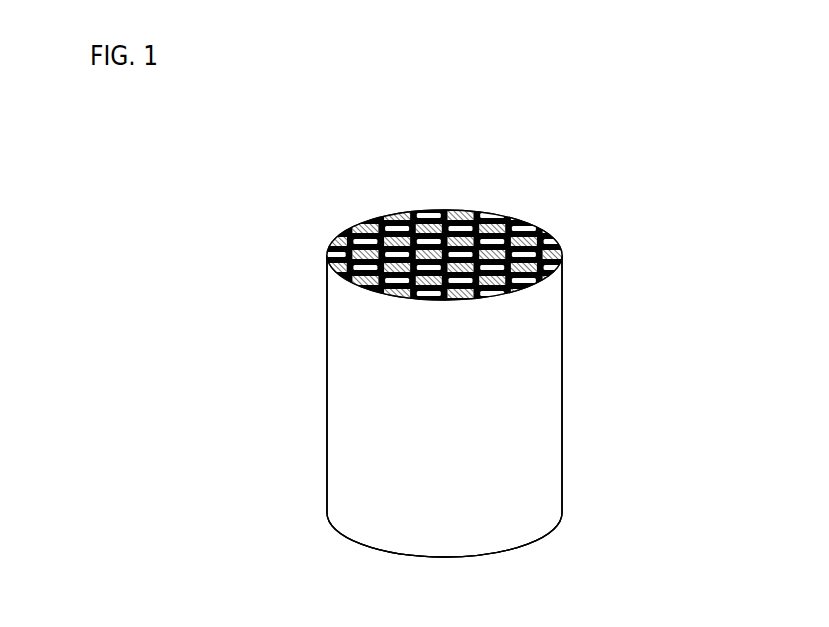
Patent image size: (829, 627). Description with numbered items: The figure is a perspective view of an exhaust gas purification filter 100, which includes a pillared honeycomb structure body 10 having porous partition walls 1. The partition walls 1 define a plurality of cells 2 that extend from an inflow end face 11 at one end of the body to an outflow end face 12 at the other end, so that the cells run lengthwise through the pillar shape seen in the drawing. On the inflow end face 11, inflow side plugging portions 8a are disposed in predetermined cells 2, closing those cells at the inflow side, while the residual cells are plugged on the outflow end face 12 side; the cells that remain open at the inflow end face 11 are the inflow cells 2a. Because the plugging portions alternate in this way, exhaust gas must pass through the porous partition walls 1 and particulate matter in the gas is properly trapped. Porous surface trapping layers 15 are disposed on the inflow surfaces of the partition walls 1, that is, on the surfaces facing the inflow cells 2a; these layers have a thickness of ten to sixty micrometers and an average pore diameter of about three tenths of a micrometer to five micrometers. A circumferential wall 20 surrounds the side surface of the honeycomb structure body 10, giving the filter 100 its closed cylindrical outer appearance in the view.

The exhaust gas purification filter 100 is at (684, 142).
The partition wall 1 is at (488, 213).
The cell 2 is at (333, 243).
The inflow cell 2a is at (334, 241).
The inflow side plugging portion 8a is at (362, 228).
The honeycomb structure body 10 is at (561, 358).
The inflow end face 11 is at (409, 226).
The outflow end face 12 is at (403, 557).
The surface trapping layer 15 is at (565, 257).
The circumferential wall 20 is at (563, 427).